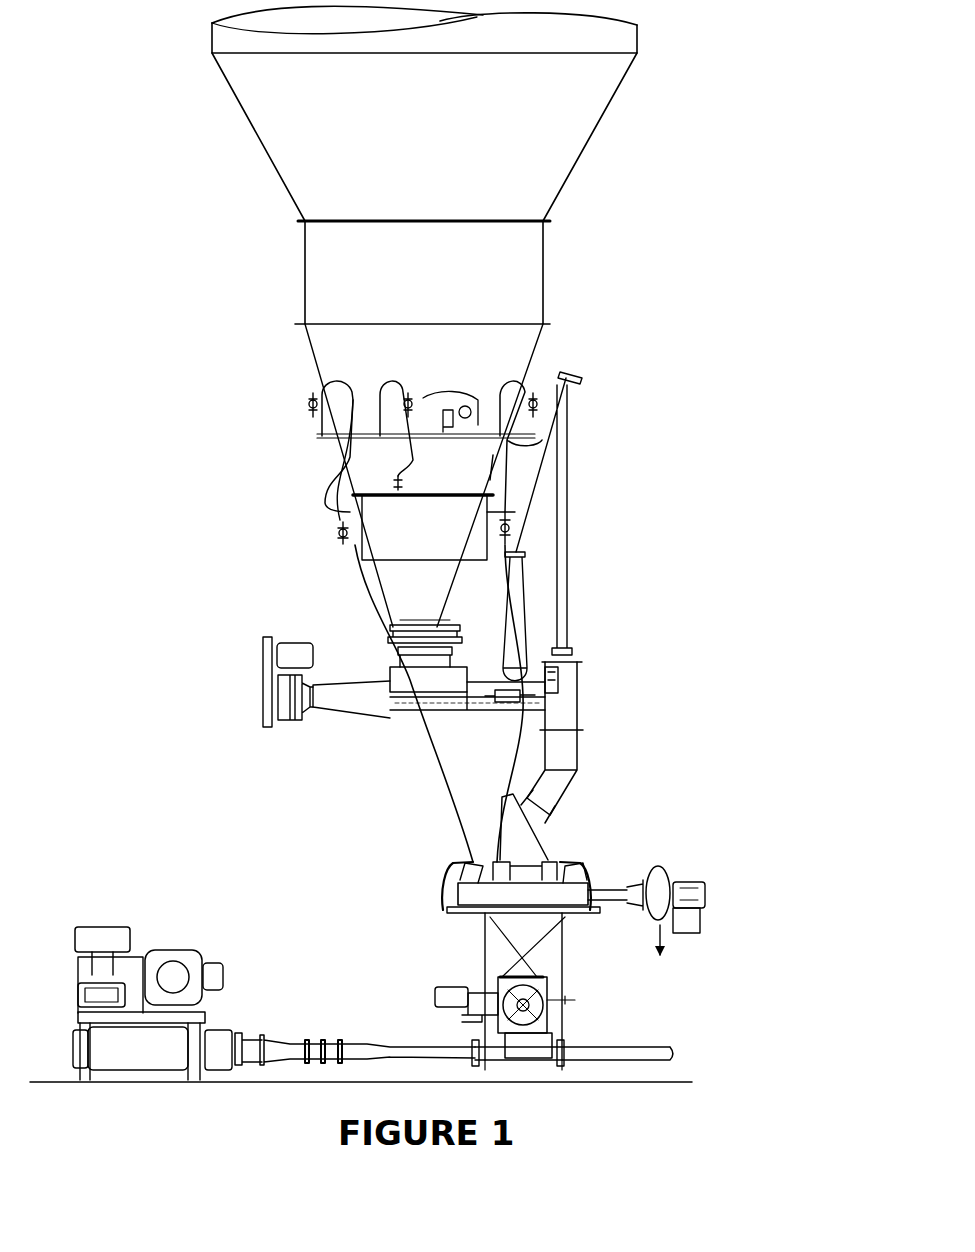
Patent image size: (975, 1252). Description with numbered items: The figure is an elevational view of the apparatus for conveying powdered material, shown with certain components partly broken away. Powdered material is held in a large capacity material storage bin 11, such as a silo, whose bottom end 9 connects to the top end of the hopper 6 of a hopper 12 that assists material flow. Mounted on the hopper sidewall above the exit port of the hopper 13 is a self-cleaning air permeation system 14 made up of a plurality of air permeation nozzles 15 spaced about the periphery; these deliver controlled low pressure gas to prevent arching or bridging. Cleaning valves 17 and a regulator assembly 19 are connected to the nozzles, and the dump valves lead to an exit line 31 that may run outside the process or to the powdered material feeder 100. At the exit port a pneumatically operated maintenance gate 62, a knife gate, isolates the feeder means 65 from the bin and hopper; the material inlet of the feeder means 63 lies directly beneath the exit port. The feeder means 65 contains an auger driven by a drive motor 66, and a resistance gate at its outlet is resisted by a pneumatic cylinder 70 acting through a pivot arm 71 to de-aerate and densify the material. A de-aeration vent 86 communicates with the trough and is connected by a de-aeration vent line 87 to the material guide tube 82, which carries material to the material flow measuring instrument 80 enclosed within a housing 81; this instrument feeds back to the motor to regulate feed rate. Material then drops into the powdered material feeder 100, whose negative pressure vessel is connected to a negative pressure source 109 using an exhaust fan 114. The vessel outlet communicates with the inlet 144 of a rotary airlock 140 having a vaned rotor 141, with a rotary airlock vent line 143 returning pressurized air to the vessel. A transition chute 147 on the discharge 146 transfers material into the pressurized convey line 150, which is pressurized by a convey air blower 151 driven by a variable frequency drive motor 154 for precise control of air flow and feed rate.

The material storage bin 11 is at (212, 45).
The bottom end of storage bin 9 is at (300, 218).
The top end of hopper 6 is at (545, 220).
The hopper 12 is at (543, 288).
The regulator assembly 19 is at (457, 410).
The cleaning valve 17 is at (310, 402).
The air permeation system 14 is at (322, 526).
The air permeation nozzle 15 is at (377, 477).
The exit line 31 is at (387, 543).
The de-aeration vent line 87 is at (567, 520).
The de-aeration vent 86 is at (530, 600).
The maintenance gate 62 is at (390, 630).
The material inlet of feeder means 63 is at (398, 657).
The exit port of hopper 13 is at (460, 613).
The drive motor 66 is at (272, 657).
The pivot arm 71 is at (570, 677).
The material guide tube 82 is at (577, 707).
The pneumatic cylinder 70 is at (533, 700).
The housing 81 is at (560, 795).
The material flow measuring instrument 80 is at (547, 837).
The feeder means 65 is at (333, 750).
The negative pressure source 109 is at (640, 836).
The exhaust fan 114 is at (662, 870).
The powdered material feeder 100 is at (440, 890).
The variable frequency drive motor 154 is at (153, 937).
The vaned rotor 141 is at (520, 1005).
The convey air blower 151 is at (170, 1060).
The discharge of rotary airlock 146 is at (493, 1047).
The rotary airlock vent line 143 is at (560, 960).
The inlet for rotary airlock 144 is at (553, 993).
The rotary airlock 140 is at (540, 1020).
The transition chute 147 is at (562, 1062).
The pressurized convey line 150 is at (280, 1090).